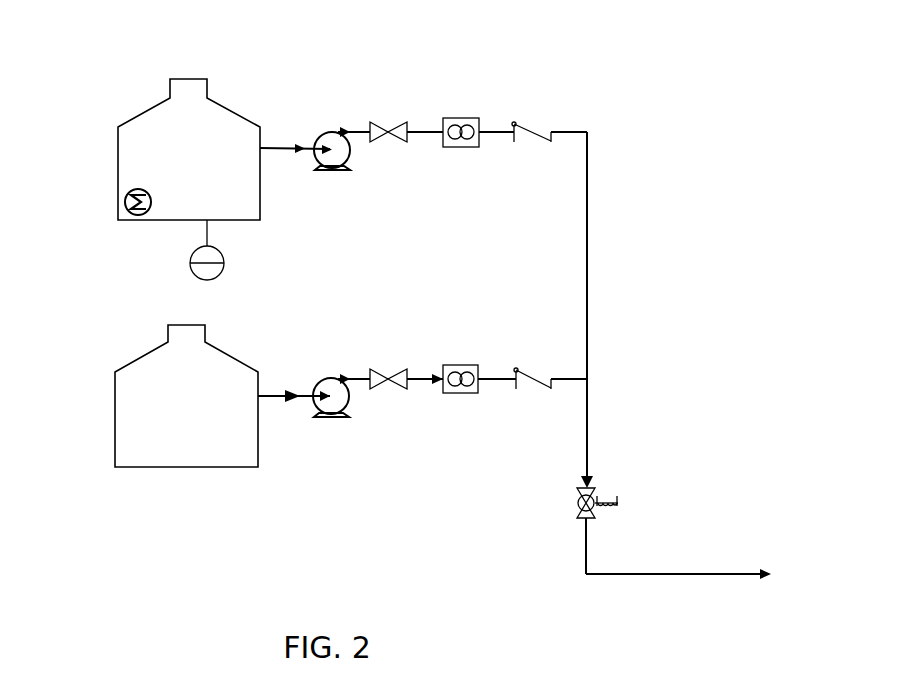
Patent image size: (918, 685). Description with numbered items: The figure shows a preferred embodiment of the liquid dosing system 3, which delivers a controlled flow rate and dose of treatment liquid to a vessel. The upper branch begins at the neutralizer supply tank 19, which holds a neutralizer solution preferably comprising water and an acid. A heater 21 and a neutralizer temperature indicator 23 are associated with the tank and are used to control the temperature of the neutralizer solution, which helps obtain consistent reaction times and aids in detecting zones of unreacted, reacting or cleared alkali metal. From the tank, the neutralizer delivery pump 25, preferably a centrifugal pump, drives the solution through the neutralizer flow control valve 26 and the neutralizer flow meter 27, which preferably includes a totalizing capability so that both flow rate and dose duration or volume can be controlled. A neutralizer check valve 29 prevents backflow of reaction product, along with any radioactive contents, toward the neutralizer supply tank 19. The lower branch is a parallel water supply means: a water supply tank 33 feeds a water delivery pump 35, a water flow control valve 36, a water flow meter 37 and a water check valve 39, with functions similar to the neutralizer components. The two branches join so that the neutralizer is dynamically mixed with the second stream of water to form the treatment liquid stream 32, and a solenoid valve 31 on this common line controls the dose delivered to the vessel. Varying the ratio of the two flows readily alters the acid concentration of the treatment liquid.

The liquid dosing system 3 is at (102, 56).
The neutralizer supply tank 19 is at (111, 134).
The heater 21 is at (135, 217).
The neutralizer temperature indicator 23 is at (203, 281).
The neutralizer delivery pump 25 is at (333, 171).
The neutralizer flow control valve 26 is at (400, 101).
The neutralizer flow meter 27 is at (468, 148).
The neutralizer check valve 29 is at (550, 124).
The solenoid valve 31 is at (618, 502).
The treatment liquid stream 32 is at (588, 416).
The water supply tank 33 is at (116, 421).
The water delivery pump 35 is at (326, 384).
The water flow control valve 36 is at (407, 388).
The water flow meter 37 is at (443, 368).
The water check valve 39 is at (552, 373).